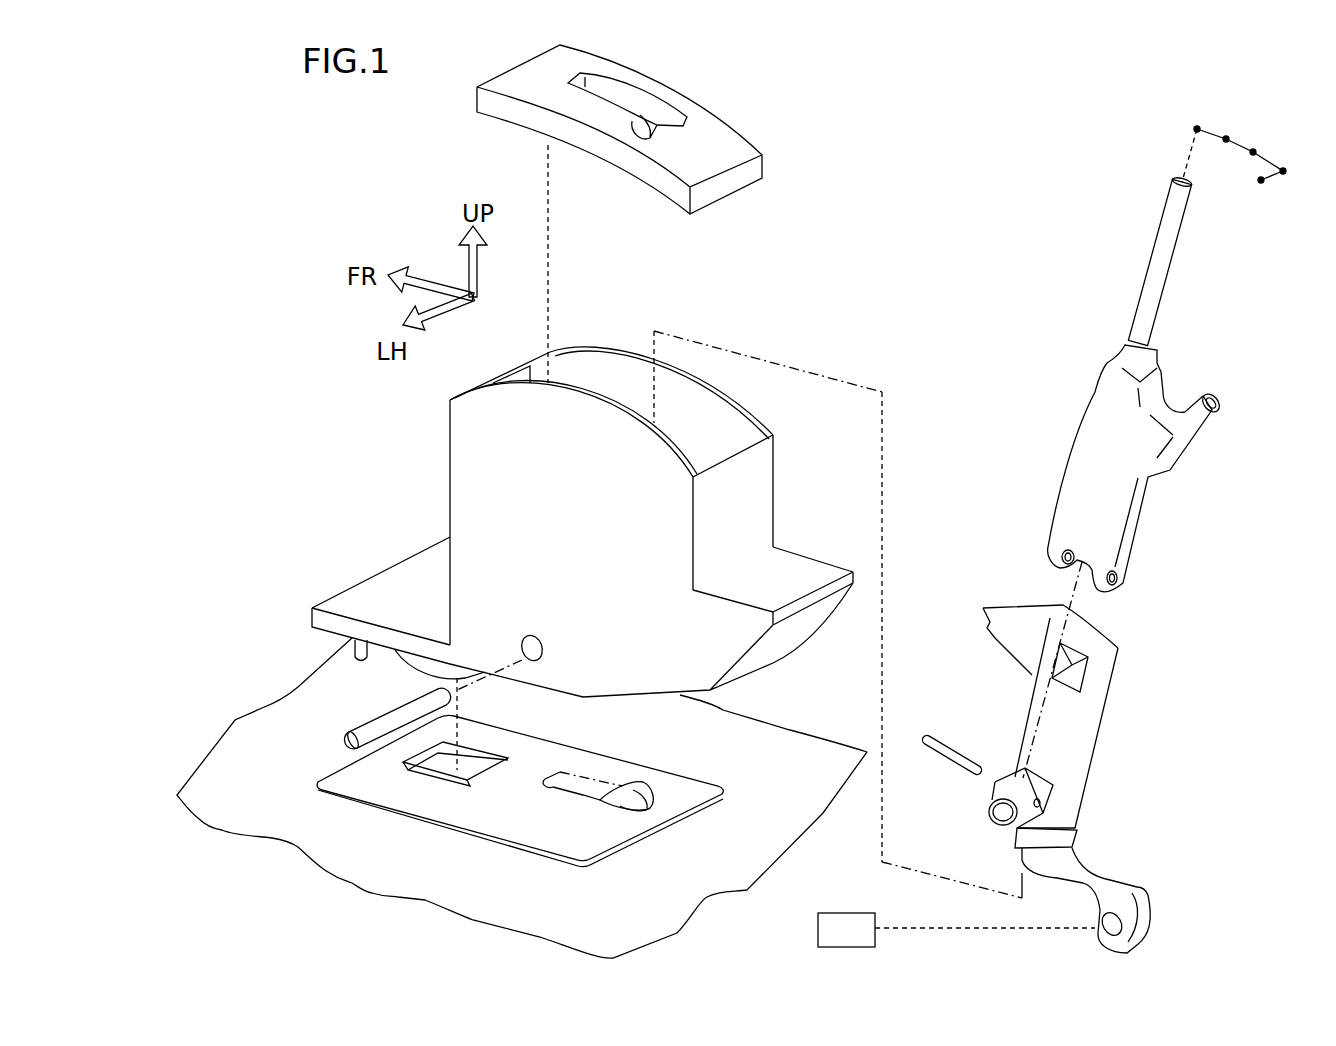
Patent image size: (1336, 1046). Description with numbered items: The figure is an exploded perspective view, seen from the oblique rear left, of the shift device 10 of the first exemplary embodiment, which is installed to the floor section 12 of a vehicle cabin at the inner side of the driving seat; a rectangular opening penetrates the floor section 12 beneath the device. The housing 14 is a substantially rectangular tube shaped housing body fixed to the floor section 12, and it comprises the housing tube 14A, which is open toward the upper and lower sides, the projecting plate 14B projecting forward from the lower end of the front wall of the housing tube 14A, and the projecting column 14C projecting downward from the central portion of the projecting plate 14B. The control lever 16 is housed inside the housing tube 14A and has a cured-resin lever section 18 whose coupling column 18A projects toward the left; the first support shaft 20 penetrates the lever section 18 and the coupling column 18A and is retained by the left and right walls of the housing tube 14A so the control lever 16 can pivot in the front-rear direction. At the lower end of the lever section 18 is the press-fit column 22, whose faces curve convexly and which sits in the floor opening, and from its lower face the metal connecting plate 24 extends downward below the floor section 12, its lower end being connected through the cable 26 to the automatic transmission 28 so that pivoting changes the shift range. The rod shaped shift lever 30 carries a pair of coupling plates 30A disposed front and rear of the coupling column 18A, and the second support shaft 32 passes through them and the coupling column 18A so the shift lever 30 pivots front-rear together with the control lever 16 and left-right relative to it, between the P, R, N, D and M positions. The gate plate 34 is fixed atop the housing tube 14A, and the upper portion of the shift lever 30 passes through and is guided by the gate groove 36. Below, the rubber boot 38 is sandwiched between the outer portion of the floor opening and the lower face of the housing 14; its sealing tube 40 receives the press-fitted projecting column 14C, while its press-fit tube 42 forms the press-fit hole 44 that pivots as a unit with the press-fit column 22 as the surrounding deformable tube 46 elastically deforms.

The shift device 10 is at (933, 178).
The floor section 12 is at (768, 847).
The housing 14 is at (582, 532).
The housing tube 14A is at (748, 405).
The projecting plate 14B is at (398, 560).
The projecting column 14C is at (410, 667).
The control lever 16 is at (1063, 716).
The lever section 18 is at (1041, 738).
The coupling column 18A is at (990, 800).
The first support shaft 20 is at (373, 716).
The press-fit column 22 is at (1078, 830).
The connecting plate 24 is at (1123, 876).
The cable 26 is at (957, 928).
The automatic transmission 28 is at (843, 912).
The shift lever 30 is at (1129, 354).
The coupling plates 30A is at (1052, 553).
The second support shaft 32 is at (953, 737).
The gate plate 34 is at (625, 129).
The gate groove 36 is at (657, 117).
The boot 38 is at (533, 786).
The sealing tube 40 is at (480, 760).
The press-fit tube 42 is at (643, 782).
The press-fit hole 44 is at (630, 787).
The deformable tube 46 is at (650, 804).